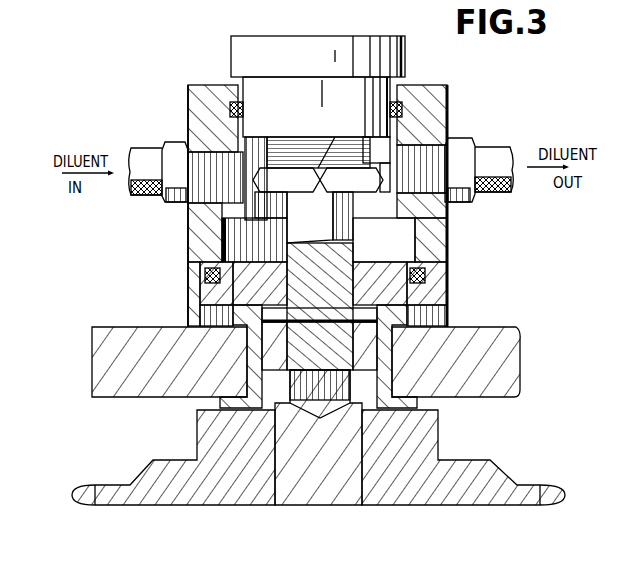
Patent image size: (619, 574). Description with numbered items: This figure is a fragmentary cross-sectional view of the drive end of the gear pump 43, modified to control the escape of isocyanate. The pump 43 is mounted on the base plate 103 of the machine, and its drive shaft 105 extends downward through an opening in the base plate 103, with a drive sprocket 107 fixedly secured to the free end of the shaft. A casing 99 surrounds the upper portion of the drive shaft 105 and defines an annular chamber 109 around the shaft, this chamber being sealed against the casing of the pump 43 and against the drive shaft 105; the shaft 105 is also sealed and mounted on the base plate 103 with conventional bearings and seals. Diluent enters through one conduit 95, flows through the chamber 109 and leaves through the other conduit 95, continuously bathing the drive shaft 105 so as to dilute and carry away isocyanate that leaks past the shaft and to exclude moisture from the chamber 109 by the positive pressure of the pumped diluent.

The gear pump 43 is at (240, 52).
The casing 99 is at (433, 93).
The conduit 95 is at (150, 196).
The annular chamber 109 is at (420, 240).
The base plate 103 is at (490, 333).
The drive sprocket 107 is at (420, 432).
The drive shaft 105 is at (335, 480).